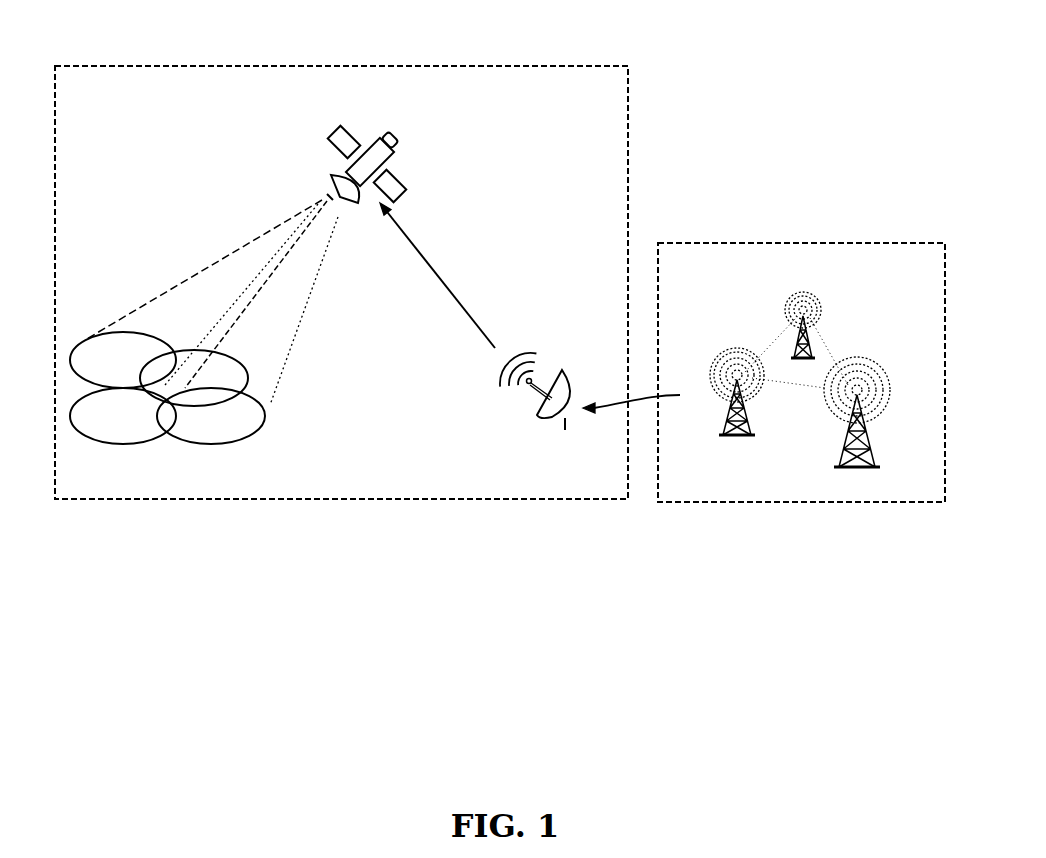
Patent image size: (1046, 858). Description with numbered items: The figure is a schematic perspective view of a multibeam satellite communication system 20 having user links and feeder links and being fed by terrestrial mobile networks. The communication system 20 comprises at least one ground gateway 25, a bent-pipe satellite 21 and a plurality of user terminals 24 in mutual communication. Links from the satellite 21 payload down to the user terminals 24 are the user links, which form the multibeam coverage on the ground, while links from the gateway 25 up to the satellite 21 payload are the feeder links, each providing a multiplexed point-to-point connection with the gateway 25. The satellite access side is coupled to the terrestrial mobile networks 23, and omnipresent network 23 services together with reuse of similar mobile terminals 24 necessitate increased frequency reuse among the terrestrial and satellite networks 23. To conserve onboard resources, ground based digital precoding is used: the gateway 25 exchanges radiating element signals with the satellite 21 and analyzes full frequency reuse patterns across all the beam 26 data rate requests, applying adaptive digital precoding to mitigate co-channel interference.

The communication system 20 is at (500, 333).
The satellite 21 is at (395, 162).
The network 23 is at (785, 467).
The user terminals 24 is at (590, 555).
The gateway 25 is at (537, 408).
The beam 26 is at (225, 412).